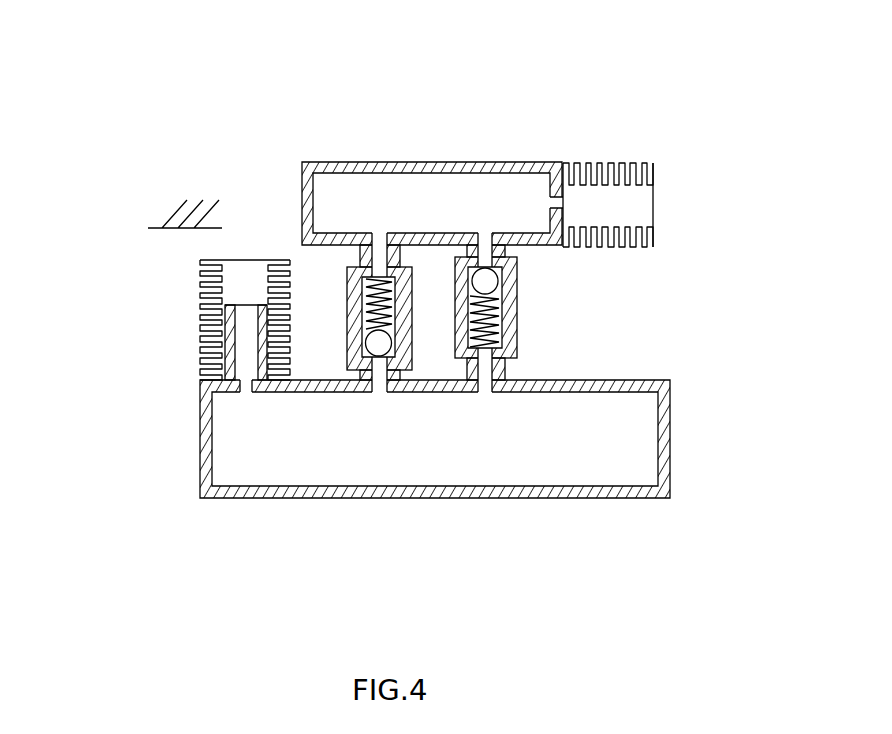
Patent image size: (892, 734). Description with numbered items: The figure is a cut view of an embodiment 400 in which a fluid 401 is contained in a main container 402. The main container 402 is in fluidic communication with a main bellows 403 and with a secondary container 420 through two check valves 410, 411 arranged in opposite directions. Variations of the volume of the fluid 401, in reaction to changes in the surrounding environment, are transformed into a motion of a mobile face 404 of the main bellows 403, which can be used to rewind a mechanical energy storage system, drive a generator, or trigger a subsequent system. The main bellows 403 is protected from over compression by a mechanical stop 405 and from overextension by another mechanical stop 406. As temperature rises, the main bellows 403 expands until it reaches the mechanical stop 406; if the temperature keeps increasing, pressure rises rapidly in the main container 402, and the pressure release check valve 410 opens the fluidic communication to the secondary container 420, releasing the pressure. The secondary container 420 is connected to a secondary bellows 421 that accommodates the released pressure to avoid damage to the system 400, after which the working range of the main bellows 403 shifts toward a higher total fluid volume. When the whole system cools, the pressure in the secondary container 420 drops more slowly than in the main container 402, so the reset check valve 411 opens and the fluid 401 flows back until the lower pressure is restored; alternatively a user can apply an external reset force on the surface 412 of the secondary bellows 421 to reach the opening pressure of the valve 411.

The embodiment 400 is at (256, 58).
The fluid 401 is at (393, 460).
The main container 402 is at (487, 499).
The main bellows 403 is at (200, 345).
The mobile face 404 is at (260, 259).
The mechanical stop 405 is at (223, 308).
The mechanical stop 406 is at (168, 230).
The pressure release check valve 410 is at (347, 297).
The reset check valve 411 is at (517, 313).
The surface 412 is at (653, 205).
The secondary container 420 is at (420, 162).
The secondary bellows 421 is at (600, 163).